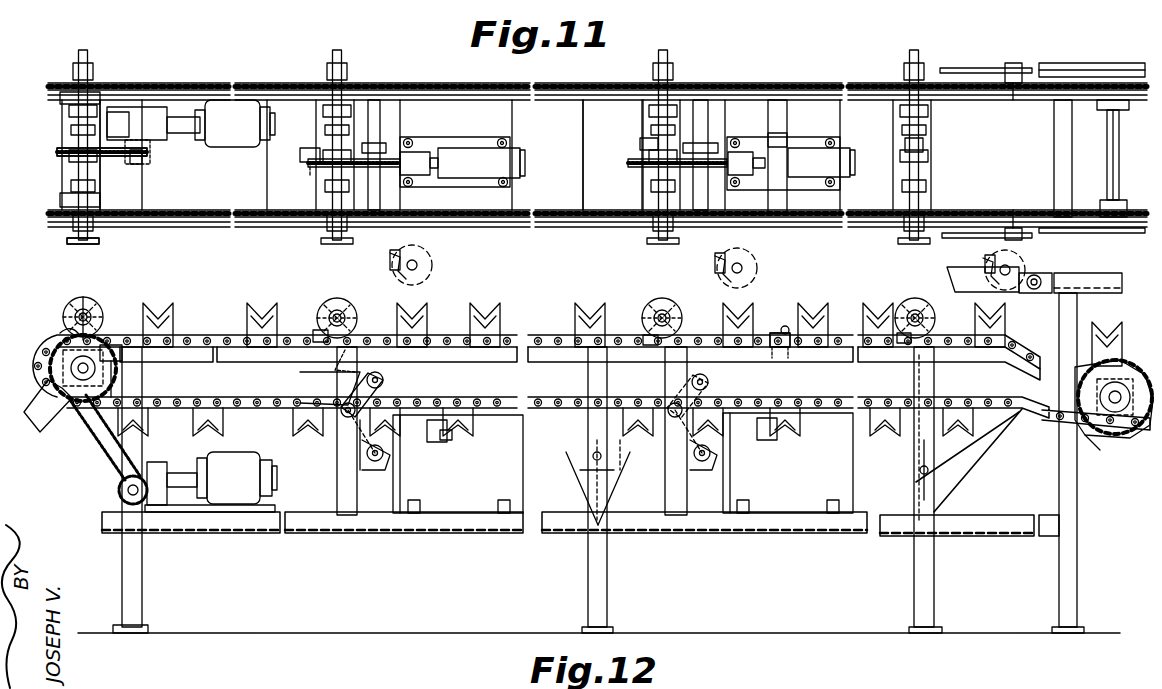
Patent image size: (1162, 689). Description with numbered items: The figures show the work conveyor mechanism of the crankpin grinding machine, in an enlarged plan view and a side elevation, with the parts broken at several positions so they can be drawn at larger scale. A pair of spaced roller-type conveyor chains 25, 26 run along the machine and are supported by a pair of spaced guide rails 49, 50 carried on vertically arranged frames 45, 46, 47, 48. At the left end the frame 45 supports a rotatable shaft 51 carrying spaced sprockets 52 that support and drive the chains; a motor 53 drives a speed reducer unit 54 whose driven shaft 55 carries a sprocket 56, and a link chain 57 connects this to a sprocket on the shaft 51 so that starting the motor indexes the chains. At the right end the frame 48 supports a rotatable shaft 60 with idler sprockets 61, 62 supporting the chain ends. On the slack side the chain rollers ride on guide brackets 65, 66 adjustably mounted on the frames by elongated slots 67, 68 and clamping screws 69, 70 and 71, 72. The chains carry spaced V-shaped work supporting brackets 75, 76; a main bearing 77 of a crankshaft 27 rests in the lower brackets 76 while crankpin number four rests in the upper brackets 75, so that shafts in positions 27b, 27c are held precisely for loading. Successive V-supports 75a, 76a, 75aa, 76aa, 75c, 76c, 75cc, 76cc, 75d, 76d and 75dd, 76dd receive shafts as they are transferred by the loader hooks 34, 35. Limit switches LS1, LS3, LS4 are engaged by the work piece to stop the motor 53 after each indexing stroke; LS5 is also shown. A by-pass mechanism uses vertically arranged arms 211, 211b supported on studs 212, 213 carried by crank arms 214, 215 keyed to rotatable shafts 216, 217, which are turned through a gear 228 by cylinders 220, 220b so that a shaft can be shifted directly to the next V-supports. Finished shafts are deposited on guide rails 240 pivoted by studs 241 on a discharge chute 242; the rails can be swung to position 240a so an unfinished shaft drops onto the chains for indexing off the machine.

In FIG. 11, the roller-type conveyor chain 25 is at (448, 83).
In FIG. 11, the roller-type conveyor chain 26 is at (505, 228).
In FIG. 12, the roller-type conveyor chain 26 is at (225, 338).
In FIG. 11, the crankshaft 27 is at (75, 55).
In FIG. 12, the crankshaft 27 is at (95, 300).
In FIG. 11, the crankshaft position 27b is at (345, 62).
In FIG. 11, the crankshaft position 27c is at (905, 70).
In FIG. 12, the work supporting hook 34 is at (433, 255).
In FIG. 12, the work supporting hook 35 is at (388, 268).
In FIG. 12, the vertical support frame 45 is at (122, 560).
In FIG. 12, the vertical support frame 46 is at (607, 580).
In FIG. 12, the vertical support frame 47 is at (914, 578).
In FIG. 12, the vertical support frame 48 is at (1077, 585).
In FIG. 11, the guide rail 49 is at (538, 100).
In FIG. 11, the guide rail 50 is at (563, 212).
In FIG. 12, the guide rail 50 is at (500, 357).
In FIG. 11, the rotatable shaft 51 is at (300, 150).
In FIG. 12, the rotatable shaft 51 is at (70, 366).
In FIG. 11, the sprocket 52 is at (58, 96).
In FIG. 12, the sprocket 52 is at (112, 345).
In FIG. 11, the motor 53 is at (240, 148).
In FIG. 12, the motor 53 is at (243, 470).
In FIG. 11, the speed reducer unit 54 is at (147, 110).
In FIG. 12, the speed reducer unit 54 is at (160, 465).
In FIG. 11, the driven shaft 55 is at (150, 145).
In FIG. 12, the driven shaft 55 is at (155, 520).
In FIG. 11, the sprocket 56 is at (145, 162).
In FIG. 12, the sprocket 56 is at (118, 488).
In FIG. 11, the link chain 57 is at (112, 155).
In FIG. 12, the link chain 57 is at (98, 445).
In FIG. 11, the rotatable shaft 60 is at (1119, 150).
In FIG. 12, the rotatable shaft 60 is at (1117, 415).
In FIG. 11, the idler sprocket 61 is at (1102, 212).
In FIG. 12, the idler sprocket 61 is at (1100, 445).
In FIG. 11, the idler sprocket 62 is at (1098, 100).
In FIG. 12, the guide bracket 65 is at (618, 462).
In FIG. 12, the guide bracket 66 is at (985, 455).
In FIG. 12, the elongated slot 67 is at (578, 480).
In FIG. 12, the elongated slot 68 is at (958, 482).
In FIG. 12, the clamping screw 69 is at (592, 455).
In FIG. 12, the clamping screw 70 is at (585, 495).
In FIG. 12, the clamping screw 71 is at (920, 452).
In FIG. 12, the clamping screw 72 is at (920, 478).
In FIG. 12, the V-shaped work supporting bracket 75 is at (68, 305).
In FIG. 12, the V-shaped supporting surface 75a is at (355, 305).
In FIG. 12, the V-shaped supporting surface 75aa is at (420, 300).
In FIG. 12, the V-shaped supporting surface 75c is at (662, 298).
In FIG. 12, the V-shaped supporting surface 75cc is at (745, 305).
In FIG. 12, the V-shaped supporting surface 75d is at (915, 298).
In FIG. 12, the V-shaped supporting surface 75dd is at (993, 301).
In FIG. 12, the V-shaped work supporting bracket 76 is at (62, 318).
In FIG. 12, the V-shaped supporting surface 76a is at (350, 315).
In FIG. 12, the V-shaped supporting surface 76aa is at (420, 318).
In FIG. 12, the V-shaped supporting surface 76c is at (675, 320).
In FIG. 12, the V-shaped supporting surface 76cc is at (778, 332).
In FIG. 12, the V-shaped supporting surface 76d is at (927, 315).
In FIG. 12, the V-shaped supporting surface 76dd is at (1037, 336).
In FIG. 11, the main bearing 77 is at (95, 228).
In FIG. 12, the main bearing 77 is at (60, 336).
In FIG. 12, the vertically arranged arm 211 is at (337, 380).
In FIG. 11, the vertically arranged arm 211b is at (708, 122).
In FIG. 12, the vertically arranged arm 211b is at (665, 380).
In FIG. 12, the stud 212 is at (300, 375).
In FIG. 12, the stud 213 is at (342, 418).
In FIG. 12, the crank arm 214 is at (385, 382).
In FIG. 12, the crank arm 215 is at (362, 470).
In FIG. 11, the rotatable shaft 216 is at (382, 120).
In FIG. 12, the rotatable shaft 216 is at (368, 365).
In FIG. 12, the rotatable shaft 217 is at (388, 460).
In FIG. 11, the cylinder 220 is at (477, 163).
In FIG. 12, the cylinder 220 is at (493, 432).
In FIG. 11, the cylinder 220b is at (730, 182).
In FIG. 12, the cylinder 220b is at (815, 425).
In FIG. 11, the gear 228 is at (405, 147).
In FIG. 11, the guide rail 240 is at (966, 68).
In FIG. 12, the guide rail 240 is at (950, 275).
In FIG. 12, the guide rail swung position 240a is at (1052, 278).
In FIG. 11, the stud 241 is at (1013, 85).
In FIG. 11, the discharge chute 242 is at (1100, 63).
In FIG. 12, the discharge chute 242 is at (1098, 293).
In FIG. 11, the limit switch LS1 is at (298, 158).
In FIG. 12, the limit switch LS1 is at (318, 330).
In FIG. 11, the limit switch LS3 is at (640, 144).
In FIG. 12, the limit switch LS3 is at (645, 333).
In FIG. 11, the limit switch LS4 is at (905, 144).
In FIG. 12, the limit switch LS4 is at (897, 333).
In FIG. 11, the limit switch LS5 is at (785, 138).
In FIG. 12, the limit switch LS5 is at (790, 330).